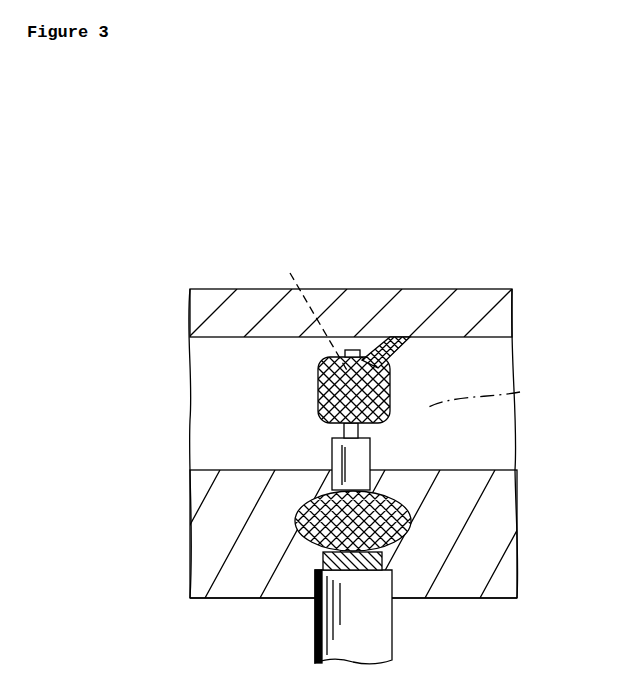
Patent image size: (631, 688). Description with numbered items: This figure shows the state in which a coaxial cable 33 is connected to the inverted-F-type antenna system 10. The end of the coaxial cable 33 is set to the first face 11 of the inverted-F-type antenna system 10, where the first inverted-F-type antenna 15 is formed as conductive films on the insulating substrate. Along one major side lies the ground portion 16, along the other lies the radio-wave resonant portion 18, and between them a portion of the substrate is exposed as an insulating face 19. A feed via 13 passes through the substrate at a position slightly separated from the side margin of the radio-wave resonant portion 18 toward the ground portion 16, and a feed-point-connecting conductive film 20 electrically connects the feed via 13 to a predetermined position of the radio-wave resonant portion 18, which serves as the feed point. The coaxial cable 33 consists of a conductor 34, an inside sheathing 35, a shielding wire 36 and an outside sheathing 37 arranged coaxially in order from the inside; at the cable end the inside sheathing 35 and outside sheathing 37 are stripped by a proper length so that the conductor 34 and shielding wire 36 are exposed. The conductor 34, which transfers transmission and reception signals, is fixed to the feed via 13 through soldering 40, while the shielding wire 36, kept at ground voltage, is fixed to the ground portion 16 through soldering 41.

The inverted-F-type antenna system 10 is at (358, 290).
The first face 11 is at (180, 392).
The feed via 13 is at (309, 310).
The first inverted-F-type antenna 15 is at (498, 601).
The ground portion 16 is at (222, 597).
The radio-wave resonant portion 18 is at (212, 297).
The insulating face 19 is at (520, 392).
The feed-point-connecting conductive film 20 is at (395, 352).
The coaxial cable 33 is at (397, 620).
The conductor 34 is at (343, 432).
The inside sheathing 35 is at (332, 456).
The shielding wire 36 is at (392, 562).
The outside sheathing 37 is at (316, 632).
The soldering 40 is at (320, 382).
The soldering 41 is at (387, 497).